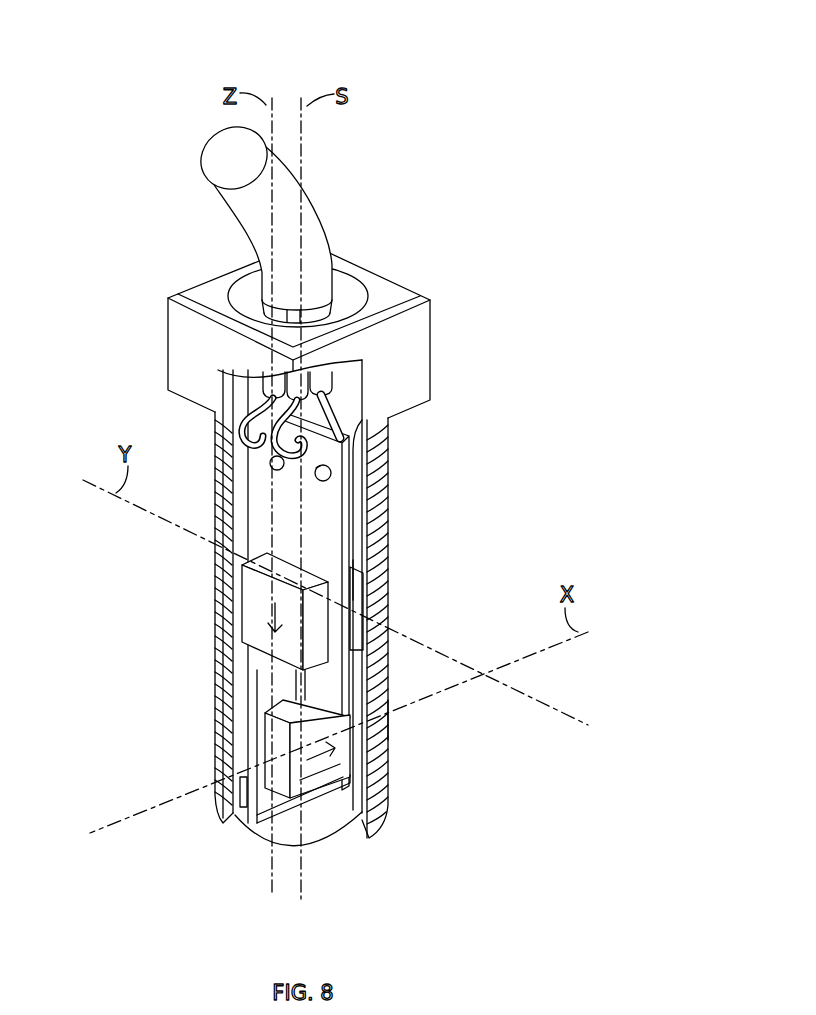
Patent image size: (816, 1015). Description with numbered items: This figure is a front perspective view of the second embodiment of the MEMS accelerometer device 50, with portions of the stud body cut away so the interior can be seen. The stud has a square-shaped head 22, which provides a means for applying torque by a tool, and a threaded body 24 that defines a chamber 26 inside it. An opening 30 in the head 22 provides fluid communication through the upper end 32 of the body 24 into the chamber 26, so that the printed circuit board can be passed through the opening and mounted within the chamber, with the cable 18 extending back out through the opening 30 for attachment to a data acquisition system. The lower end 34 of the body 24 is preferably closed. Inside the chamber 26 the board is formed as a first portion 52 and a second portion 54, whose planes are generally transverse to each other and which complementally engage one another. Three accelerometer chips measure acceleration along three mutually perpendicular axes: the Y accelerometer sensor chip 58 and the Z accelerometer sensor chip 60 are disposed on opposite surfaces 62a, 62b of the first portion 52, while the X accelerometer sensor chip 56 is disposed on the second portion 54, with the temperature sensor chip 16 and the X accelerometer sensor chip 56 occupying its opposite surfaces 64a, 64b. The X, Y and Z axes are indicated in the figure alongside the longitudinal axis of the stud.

The MEMS accelerometer device 50 is at (424, 51).
The cable 18 is at (259, 215).
The opening 30 is at (340, 281).
The square-shaped head 22 is at (415, 360).
The upper end 32 is at (380, 430).
The threaded body 24 is at (380, 462).
The first portion 52 is at (330, 535).
The surface 62a is at (355, 556).
The surface 62b is at (262, 518).
The Z accelerometer sensor chip 60 is at (262, 598).
The Y accelerometer sensor chip 58 is at (360, 592).
The chamber 26 is at (386, 718).
The X accelerometer sensor chip 56 is at (344, 758).
The lower end 34 is at (383, 818).
The temperature sensor chip 16 is at (246, 806).
The second portion 54 is at (270, 810).
The surface 64a is at (249, 753).
The surface 64b is at (332, 792).